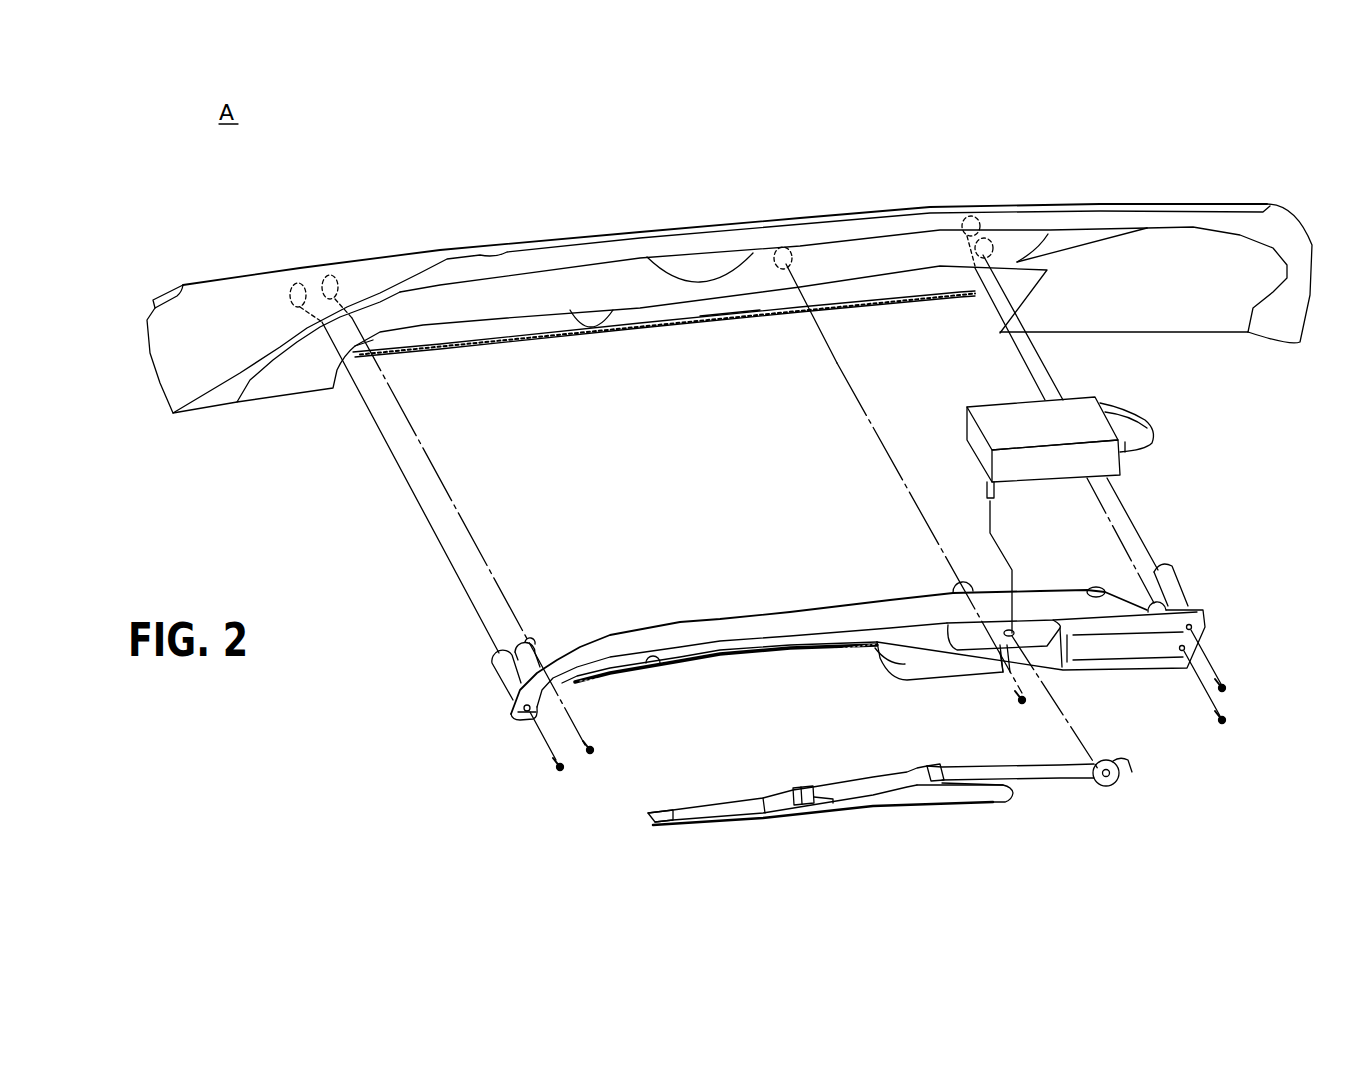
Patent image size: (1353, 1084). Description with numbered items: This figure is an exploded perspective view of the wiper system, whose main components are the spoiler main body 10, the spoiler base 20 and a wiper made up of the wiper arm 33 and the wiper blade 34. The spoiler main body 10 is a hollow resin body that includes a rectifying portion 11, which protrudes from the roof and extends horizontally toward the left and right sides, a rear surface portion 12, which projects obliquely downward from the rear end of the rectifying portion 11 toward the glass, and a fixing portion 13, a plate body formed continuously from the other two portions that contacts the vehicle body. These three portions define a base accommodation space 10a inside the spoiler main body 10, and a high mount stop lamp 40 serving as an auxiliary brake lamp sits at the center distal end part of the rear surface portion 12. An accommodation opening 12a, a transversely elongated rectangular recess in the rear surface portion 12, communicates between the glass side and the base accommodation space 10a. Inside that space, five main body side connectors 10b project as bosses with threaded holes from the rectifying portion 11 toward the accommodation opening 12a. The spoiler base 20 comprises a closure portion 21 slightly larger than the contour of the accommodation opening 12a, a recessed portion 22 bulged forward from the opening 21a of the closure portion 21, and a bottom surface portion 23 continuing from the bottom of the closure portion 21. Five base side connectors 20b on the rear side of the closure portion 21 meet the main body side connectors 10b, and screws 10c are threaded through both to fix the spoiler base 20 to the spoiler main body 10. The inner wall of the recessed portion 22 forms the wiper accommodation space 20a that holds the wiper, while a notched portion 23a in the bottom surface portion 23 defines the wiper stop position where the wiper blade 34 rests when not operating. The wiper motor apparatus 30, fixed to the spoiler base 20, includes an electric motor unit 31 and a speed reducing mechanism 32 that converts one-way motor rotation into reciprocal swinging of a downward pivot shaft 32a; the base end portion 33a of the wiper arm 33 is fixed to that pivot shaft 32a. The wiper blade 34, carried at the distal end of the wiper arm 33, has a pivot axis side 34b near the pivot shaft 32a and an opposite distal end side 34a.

The spoiler main body 10 is at (1063, 187).
The base accommodation space 10a is at (730, 320).
The main body side connector 10b is at (300, 283).
The screw 10c is at (560, 770).
The rectifying portion 11 is at (205, 302).
The rear surface portion 12 is at (1212, 253).
The accommodation opening 12a is at (605, 320).
The fixing portion 13 is at (500, 332).
The spoiler base 20 is at (555, 602).
The wiper accommodation space 20a is at (735, 664).
The base side connector 20b is at (492, 668).
The closure portion 21 is at (1120, 650).
The opening 21a is at (651, 658).
The recessed portion 22 is at (757, 626).
The bottom surface portion 23 is at (907, 642).
The notched portion 23a is at (879, 646).
The wiper motor apparatus 30 is at (945, 426).
The electric motor unit 31 is at (1130, 417).
The speed reducing mechanism 32 is at (1003, 418).
The pivot shaft 32a is at (985, 490).
The wiper arm 33 is at (1046, 785).
The base end portion 33a is at (1132, 770).
The wiper blade 34 is at (720, 810).
The distal end side 34a is at (653, 826).
The pivot axis side 34b is at (997, 803).
The high mount stop lamp 40 is at (837, 254).